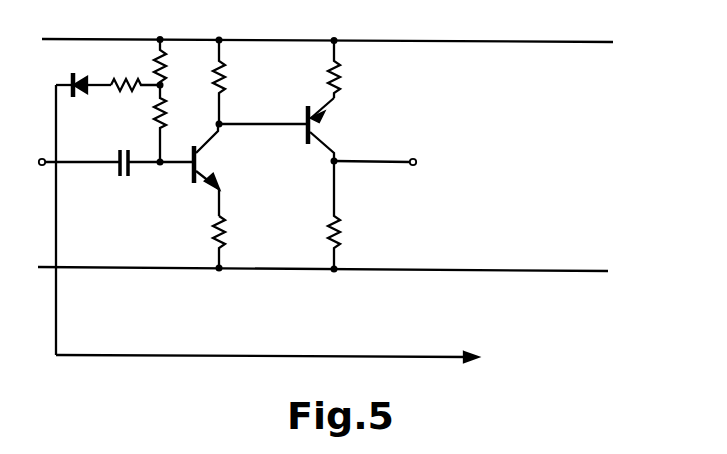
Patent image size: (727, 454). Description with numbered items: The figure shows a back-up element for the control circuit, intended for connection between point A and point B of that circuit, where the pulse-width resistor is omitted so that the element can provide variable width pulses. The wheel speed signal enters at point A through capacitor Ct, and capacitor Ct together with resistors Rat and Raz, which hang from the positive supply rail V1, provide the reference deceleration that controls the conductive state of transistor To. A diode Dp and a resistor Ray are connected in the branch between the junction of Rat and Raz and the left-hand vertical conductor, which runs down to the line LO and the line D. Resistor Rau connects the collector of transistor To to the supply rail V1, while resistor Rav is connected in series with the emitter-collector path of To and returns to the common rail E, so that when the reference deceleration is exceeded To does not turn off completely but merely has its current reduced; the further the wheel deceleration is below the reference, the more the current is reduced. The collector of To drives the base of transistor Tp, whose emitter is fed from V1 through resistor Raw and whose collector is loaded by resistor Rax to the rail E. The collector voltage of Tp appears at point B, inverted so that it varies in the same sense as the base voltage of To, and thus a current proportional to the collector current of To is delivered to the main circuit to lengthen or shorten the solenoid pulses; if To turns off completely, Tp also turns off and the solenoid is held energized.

The positive supply voltage rail V1 is at (328, 30).
The ground/reference rail E is at (576, 271).
The output line D is at (267, 345).
The local oscillator line LO is at (222, 355).
The resistor Raz is at (187, 56).
The resistor Rat is at (187, 101).
The diode Dp is at (80, 77).
The resistor Ray is at (132, 74).
The point A is at (76, 151).
The capacitor Ct is at (118, 140).
The transistor To is at (213, 170).
The resistor Rau is at (246, 66).
The resistor Rav is at (246, 220).
The resistor Raw is at (361, 66).
The transistor Tp is at (330, 129).
The point B is at (376, 151).
The resistor Rax is at (361, 220).